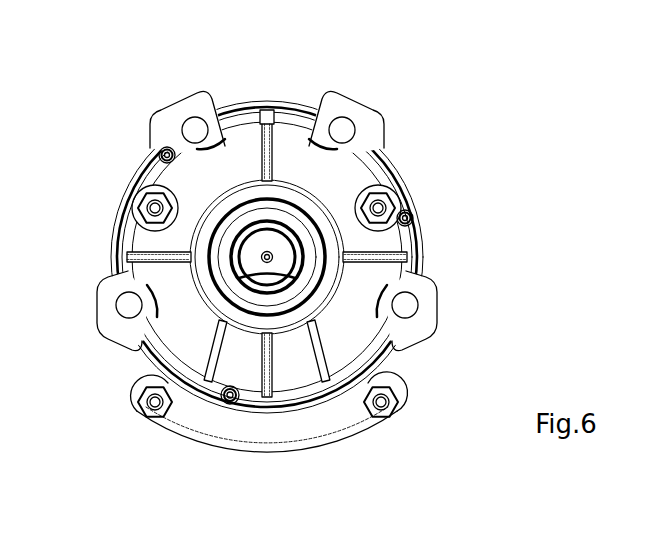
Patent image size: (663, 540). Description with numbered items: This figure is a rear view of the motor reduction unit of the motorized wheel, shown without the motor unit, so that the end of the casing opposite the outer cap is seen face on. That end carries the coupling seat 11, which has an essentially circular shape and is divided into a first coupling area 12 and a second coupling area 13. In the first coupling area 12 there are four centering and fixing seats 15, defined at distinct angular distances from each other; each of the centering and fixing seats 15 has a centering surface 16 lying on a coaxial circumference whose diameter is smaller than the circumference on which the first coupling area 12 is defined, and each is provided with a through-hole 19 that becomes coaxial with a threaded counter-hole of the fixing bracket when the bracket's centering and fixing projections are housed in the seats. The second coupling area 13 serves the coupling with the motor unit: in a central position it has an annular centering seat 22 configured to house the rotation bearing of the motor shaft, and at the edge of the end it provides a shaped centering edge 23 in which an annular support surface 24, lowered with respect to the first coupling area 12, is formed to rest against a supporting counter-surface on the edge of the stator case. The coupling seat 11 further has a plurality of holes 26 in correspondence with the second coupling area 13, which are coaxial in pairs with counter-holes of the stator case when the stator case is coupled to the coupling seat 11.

The coupling seat 11 is at (411, 167).
The first coupling area 12 is at (269, 89).
The second coupling area 13 is at (373, 240).
The centering and fixing seats 15 is at (163, 84).
The centering surface 16 is at (188, 134).
The through-hole 19 is at (406, 304).
The annular centering seat 22 is at (293, 338).
The shaped centering edge 23 is at (266, 426).
The annular support surface 24 is at (255, 403).
The holes 26 is at (411, 213).